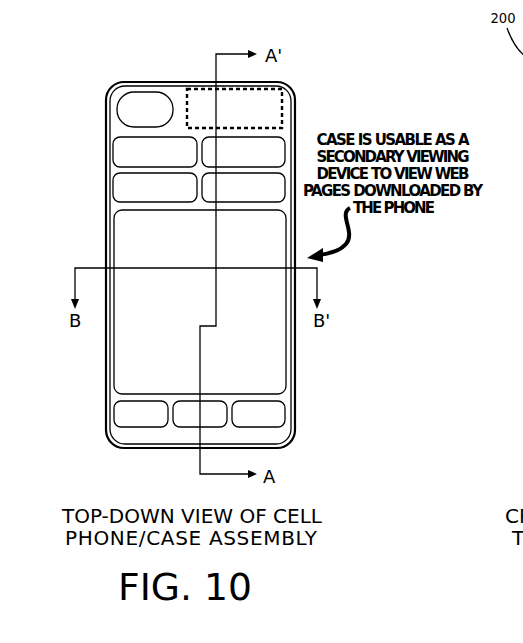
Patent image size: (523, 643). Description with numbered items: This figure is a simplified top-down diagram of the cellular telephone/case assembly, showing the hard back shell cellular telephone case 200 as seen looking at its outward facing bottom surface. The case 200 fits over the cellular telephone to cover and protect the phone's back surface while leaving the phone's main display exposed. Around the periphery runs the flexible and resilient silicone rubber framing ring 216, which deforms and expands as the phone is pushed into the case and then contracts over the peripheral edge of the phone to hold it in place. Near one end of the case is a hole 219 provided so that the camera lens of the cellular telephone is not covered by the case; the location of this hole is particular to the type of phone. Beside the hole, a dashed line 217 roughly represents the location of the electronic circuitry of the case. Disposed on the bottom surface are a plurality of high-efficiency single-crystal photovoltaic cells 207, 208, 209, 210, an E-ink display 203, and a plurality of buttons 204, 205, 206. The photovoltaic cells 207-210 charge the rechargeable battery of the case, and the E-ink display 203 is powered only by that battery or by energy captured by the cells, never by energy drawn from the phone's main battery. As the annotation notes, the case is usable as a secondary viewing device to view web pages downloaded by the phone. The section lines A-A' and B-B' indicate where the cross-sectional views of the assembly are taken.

The hard back shell cellular telephone case 200 is at (92, 58).
The E-ink display 203 is at (200, 302).
The button 204 is at (141, 414).
The button 205 is at (200, 414).
The button 206 is at (258, 414).
The high-efficiency single-crystal photovoltaic cell 207 is at (155, 152).
The high-efficiency single-crystal photovoltaic cell 208 is at (243, 152).
The high-efficiency single-crystal photovoltaic cell 209 is at (155, 187).
The high-efficiency single-crystal photovoltaic cell 210 is at (243, 187).
The framing ring 216 is at (105, 387).
The dashed line 217 is at (283, 108).
The hole 219 is at (145, 109).